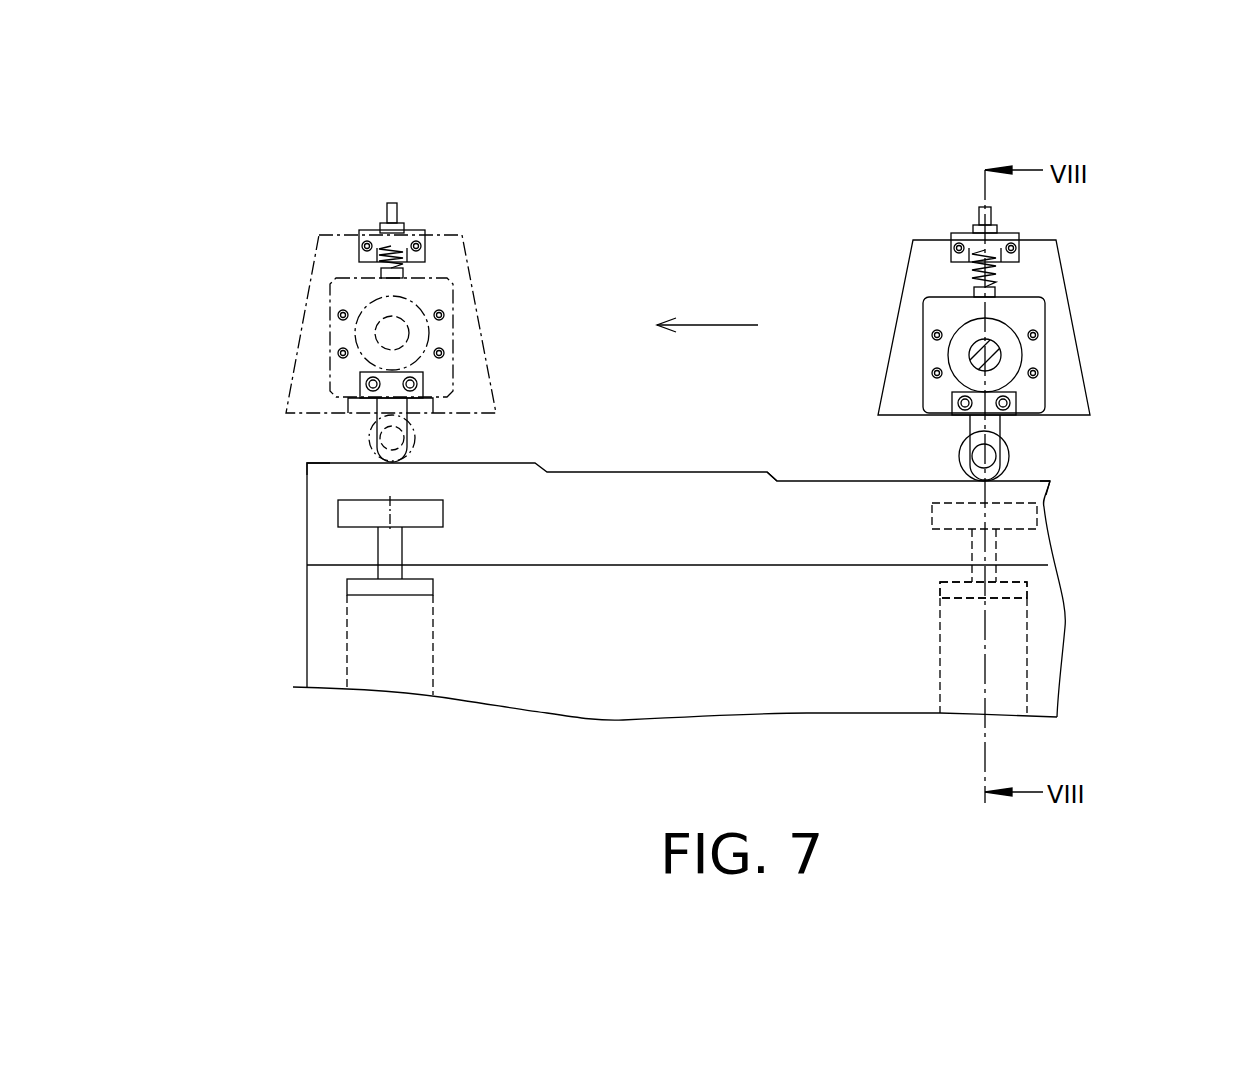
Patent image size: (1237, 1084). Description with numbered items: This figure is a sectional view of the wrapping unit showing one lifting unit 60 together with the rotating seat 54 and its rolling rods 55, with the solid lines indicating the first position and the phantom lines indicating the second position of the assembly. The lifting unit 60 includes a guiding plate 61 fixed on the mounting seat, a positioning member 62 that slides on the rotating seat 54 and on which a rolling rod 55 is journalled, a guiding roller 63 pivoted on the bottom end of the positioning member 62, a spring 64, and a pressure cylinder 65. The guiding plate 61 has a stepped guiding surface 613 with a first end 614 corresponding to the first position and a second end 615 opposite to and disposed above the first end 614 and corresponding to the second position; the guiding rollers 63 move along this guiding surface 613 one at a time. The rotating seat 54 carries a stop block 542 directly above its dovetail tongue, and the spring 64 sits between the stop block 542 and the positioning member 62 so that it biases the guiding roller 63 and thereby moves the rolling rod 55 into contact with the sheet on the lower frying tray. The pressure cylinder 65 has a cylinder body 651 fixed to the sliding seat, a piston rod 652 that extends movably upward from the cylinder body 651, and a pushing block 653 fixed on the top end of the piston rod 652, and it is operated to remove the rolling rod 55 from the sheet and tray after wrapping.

The lifting unit 60 is at (852, 222).
The guiding plate 61 is at (660, 490).
The guiding surface 613 is at (768, 470).
The first end 614 is at (1052, 476).
The second end 615 is at (337, 460).
The pressure cylinder 65 is at (345, 632).
The cylinder body 651 is at (1013, 625).
The piston rod 652 is at (995, 548).
The pushing block 653 is at (360, 500).
The rotating seat 54 is at (448, 250).
The stop block 542 is at (1005, 238).
The spring 64 is at (995, 272).
The positioning member 62 is at (337, 293).
The rolling rod 55 is at (403, 333).
The guiding roller 63 is at (415, 437).